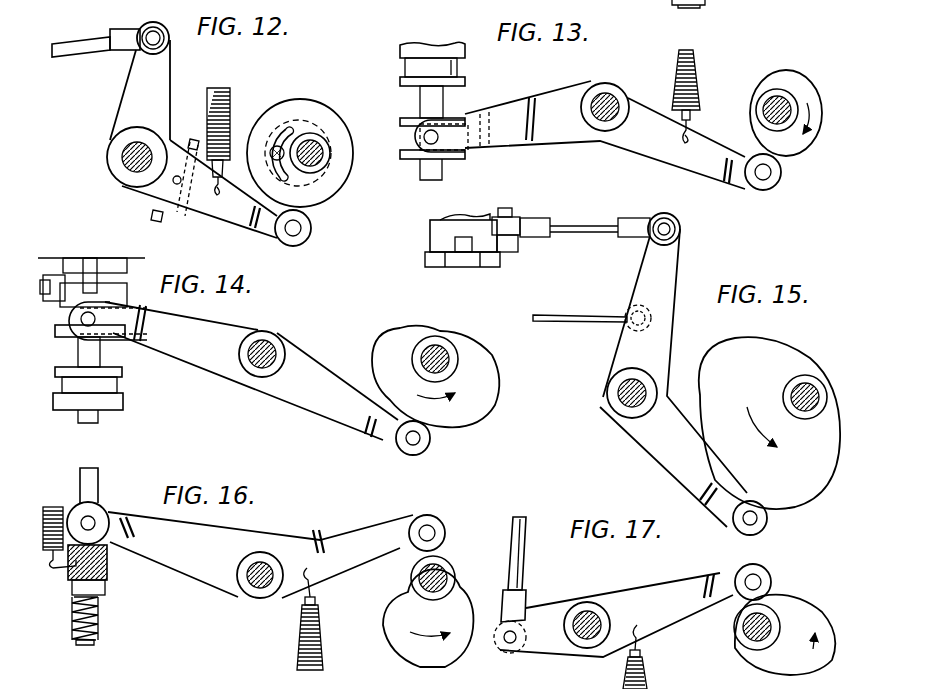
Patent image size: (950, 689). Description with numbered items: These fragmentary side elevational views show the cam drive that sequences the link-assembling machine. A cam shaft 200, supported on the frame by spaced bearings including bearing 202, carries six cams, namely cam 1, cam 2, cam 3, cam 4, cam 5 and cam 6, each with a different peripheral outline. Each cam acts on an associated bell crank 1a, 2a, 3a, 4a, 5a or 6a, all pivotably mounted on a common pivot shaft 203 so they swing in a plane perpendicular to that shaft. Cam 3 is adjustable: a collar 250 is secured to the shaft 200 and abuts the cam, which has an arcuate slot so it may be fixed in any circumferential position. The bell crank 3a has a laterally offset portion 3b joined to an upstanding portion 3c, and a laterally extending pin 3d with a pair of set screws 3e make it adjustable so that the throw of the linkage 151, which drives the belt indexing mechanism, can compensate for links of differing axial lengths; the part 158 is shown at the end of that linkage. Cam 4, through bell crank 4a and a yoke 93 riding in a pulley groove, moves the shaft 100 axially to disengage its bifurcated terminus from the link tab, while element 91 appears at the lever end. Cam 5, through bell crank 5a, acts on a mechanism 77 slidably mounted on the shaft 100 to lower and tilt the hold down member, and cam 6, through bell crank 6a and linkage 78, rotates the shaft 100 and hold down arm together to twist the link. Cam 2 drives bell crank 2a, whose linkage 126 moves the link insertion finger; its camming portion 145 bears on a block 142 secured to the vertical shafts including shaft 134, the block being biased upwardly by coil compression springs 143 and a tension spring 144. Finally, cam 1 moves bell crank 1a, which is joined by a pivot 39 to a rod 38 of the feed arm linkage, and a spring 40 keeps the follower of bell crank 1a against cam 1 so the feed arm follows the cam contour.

In FIG. 12, the rod 158 is at (64, 42).
In FIG. 12, the linkage 151 is at (92, 52).
In FIG. 12, the upstanding portion 3c is at (160, 100).
In FIG. 12, the pivot shaft 203 is at (125, 163).
In FIG. 13, the pivot shaft 203 is at (607, 100).
In FIG. 14, the pivot shaft 203 is at (272, 350).
In FIG. 15, the pivot shaft 203 is at (620, 398).
In FIG. 16, the pivot shaft 203 is at (262, 595).
In FIG. 17, the pivot shaft 203 is at (586, 646).
In FIG. 12, the bell crank 3a is at (216, 214).
In FIG. 12, the laterally offset portion 3b is at (180, 214).
In FIG. 12, the laterally extending pin 3d is at (168, 188).
In FIG. 12, the set screws 3e is at (195, 139).
In FIG. 12, the cam 3 is at (303, 105).
In FIG. 12, the cam shaft 200 is at (318, 148).
In FIG. 13, the cam shaft 200 is at (796, 107).
In FIG. 14, the cam shaft 200 is at (448, 348).
In FIG. 15, the cam shaft 200 is at (813, 393).
In FIG. 16, the cam shaft 200 is at (444, 575).
In FIG. 17, the cam shaft 200 is at (752, 641).
In FIG. 12, the collar 250 is at (322, 195).
In FIG. 13, the bearing 202 is at (657, 10).
In FIG. 13, the mechanism 77 is at (466, 72).
In FIG. 14, the mechanism 77 is at (80, 338).
In FIG. 15, the mechanism 77 is at (438, 240).
In FIG. 13, the shaft 100 is at (440, 178).
In FIG. 14, the shaft 100 is at (143, 429).
In FIG. 13, the yoke 93 is at (480, 113).
In FIG. 13, the bell crank 4a is at (652, 150).
In FIG. 13, the cam 4 is at (789, 75).
In FIG. 14, the lever end 91 is at (128, 340).
In FIG. 14, the bell crank 5a is at (318, 410).
In FIG. 14, the cam 5 is at (403, 331).
In FIG. 15, the linkage 78 is at (590, 231).
In FIG. 15, the bell crank 6a is at (650, 445).
In FIG. 15, the cam 6 is at (765, 345).
In FIG. 16, the linkage 126 is at (140, 484).
In FIG. 16, the camming portion 145 is at (106, 518).
In FIG. 16, the bell crank 2a is at (350, 540).
In FIG. 16, the tension spring 144 is at (52, 505).
In FIG. 16, the block 142 is at (145, 580).
In FIG. 16, the coil compression springs 143 is at (100, 624).
In FIG. 16, the shaft 134 is at (86, 646).
In FIG. 16, the cam 2 is at (393, 641).
In FIG. 17, the rod 38 is at (524, 542).
In FIG. 17, the spring 40 is at (525, 571).
In FIG. 17, the pivot 39 is at (509, 646).
In FIG. 17, the bell crank 1a is at (684, 603).
In FIG. 17, the cam 1 is at (800, 605).